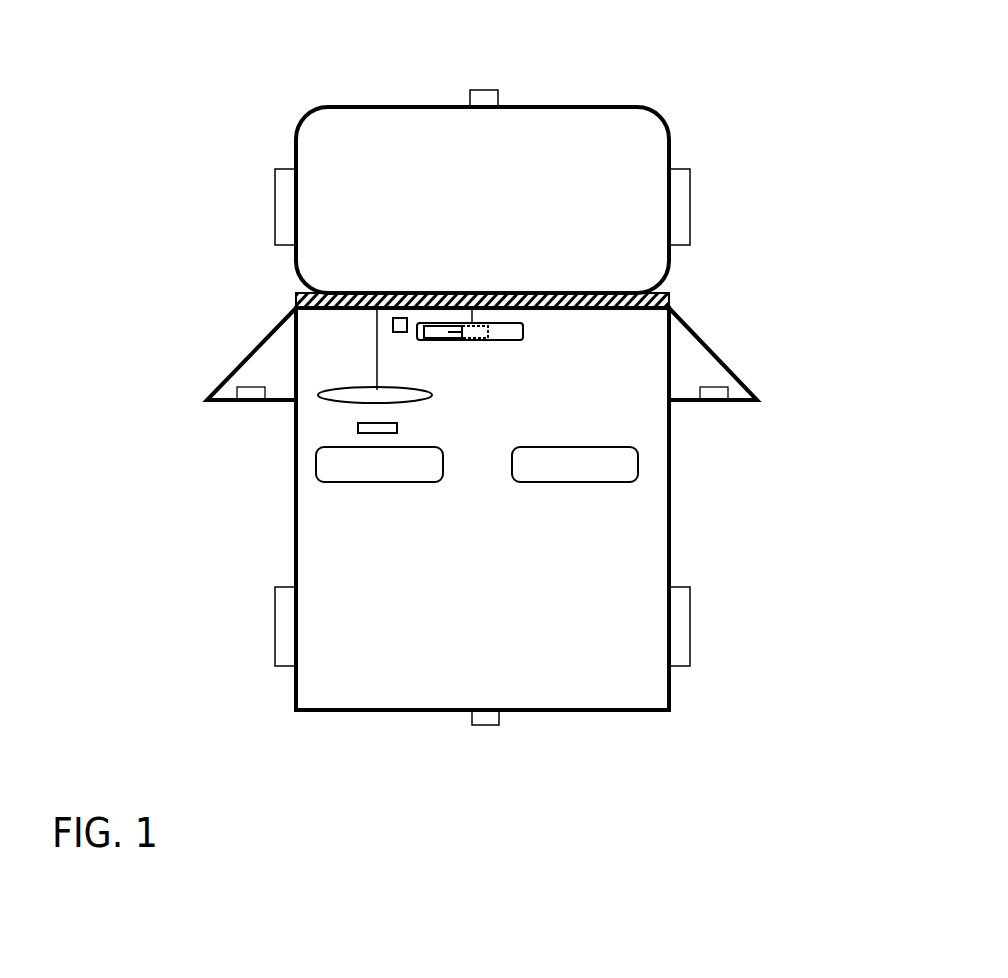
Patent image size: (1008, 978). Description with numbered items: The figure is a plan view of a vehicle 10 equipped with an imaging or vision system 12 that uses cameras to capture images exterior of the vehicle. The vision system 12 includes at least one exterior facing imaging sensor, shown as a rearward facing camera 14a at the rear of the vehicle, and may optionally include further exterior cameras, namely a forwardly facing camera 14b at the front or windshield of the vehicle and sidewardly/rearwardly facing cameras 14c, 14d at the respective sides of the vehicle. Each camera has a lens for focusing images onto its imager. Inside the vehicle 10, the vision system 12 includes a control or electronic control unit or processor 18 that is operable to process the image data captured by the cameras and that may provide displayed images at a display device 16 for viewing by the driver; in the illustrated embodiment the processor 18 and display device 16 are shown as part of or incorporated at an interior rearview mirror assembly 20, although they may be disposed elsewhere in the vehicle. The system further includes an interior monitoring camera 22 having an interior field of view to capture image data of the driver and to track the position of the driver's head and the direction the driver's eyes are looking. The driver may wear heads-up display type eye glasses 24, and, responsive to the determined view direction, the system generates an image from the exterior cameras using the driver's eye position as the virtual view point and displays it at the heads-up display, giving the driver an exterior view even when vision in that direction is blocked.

The vehicle 10 is at (208, 114).
The vision system 12 is at (425, 747).
The rearward facing camera 14a is at (487, 720).
The forwardly facing camera 14b is at (482, 92).
The sidewardly/rearwardly facing camera 14c is at (248, 391).
The sidewardly/rearwardly facing camera 14d is at (715, 393).
The display device 16 is at (440, 332).
The electronic control unit 18 is at (480, 332).
The interior rearview mirror assembly 20 is at (523, 328).
The interior monitoring camera 22 is at (406, 318).
The heads-up display type eye glasses 24 is at (378, 433).